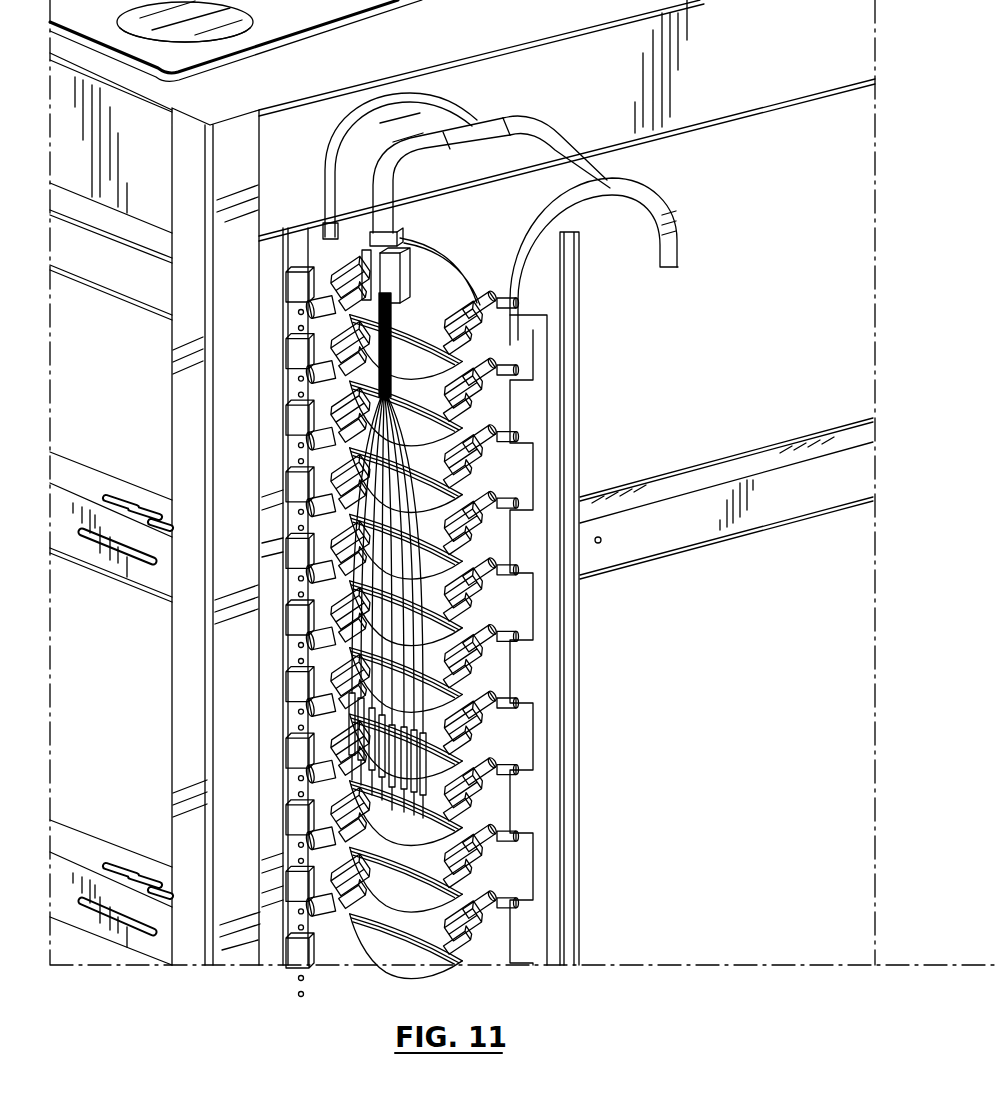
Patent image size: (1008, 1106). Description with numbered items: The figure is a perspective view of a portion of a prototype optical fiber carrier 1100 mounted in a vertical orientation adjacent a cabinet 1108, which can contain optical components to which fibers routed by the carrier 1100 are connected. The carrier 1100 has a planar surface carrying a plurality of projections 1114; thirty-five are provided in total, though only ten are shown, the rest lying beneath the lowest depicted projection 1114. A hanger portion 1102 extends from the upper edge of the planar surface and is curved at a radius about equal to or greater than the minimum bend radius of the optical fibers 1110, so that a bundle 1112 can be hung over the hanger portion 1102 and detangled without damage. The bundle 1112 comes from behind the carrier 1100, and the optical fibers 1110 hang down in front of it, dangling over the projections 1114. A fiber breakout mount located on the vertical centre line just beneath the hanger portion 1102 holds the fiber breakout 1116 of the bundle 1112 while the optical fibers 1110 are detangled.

The carrier 1100 is at (521, 970).
The hanger portion 1102 is at (500, 226).
The cabinet 1108 is at (143, 303).
The optical fibers 1110 is at (428, 652).
The bundle 1112 is at (480, 124).
The projections 1114 is at (400, 289).
The fiber breakout 1116 is at (330, 230).